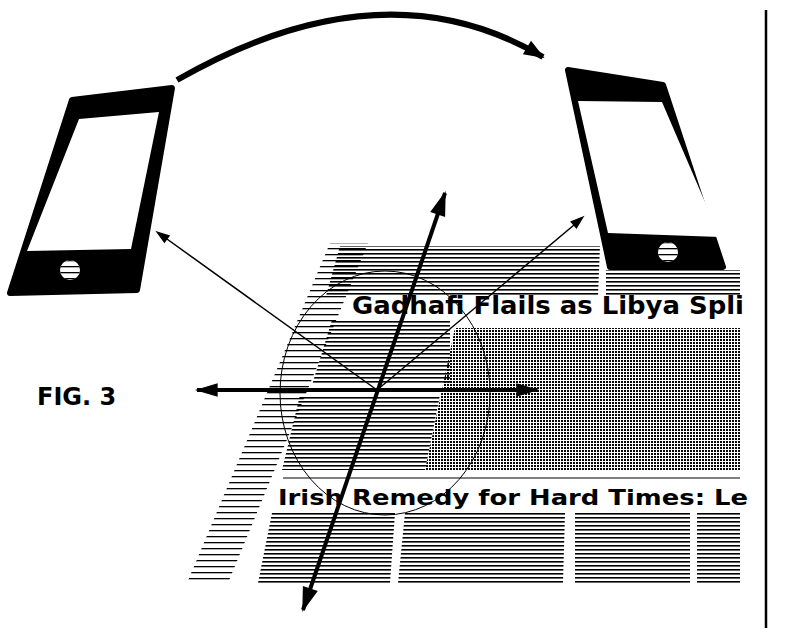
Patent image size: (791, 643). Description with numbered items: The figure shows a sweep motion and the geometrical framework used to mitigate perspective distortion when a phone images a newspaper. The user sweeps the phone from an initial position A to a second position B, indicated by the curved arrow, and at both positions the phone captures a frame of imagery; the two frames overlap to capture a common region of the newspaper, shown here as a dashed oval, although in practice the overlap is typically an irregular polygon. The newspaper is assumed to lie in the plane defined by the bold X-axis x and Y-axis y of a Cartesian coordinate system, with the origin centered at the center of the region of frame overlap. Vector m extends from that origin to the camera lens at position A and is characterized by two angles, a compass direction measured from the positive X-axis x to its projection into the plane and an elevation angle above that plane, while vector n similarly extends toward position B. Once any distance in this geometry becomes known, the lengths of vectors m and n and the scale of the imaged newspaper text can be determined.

The initial position A is at (91, 180).
The second position B is at (645, 160).
The X-axis x is at (349, 391).
The Y-axis y is at (376, 391).
The vector m is at (267, 311).
The vector n is at (480, 300).